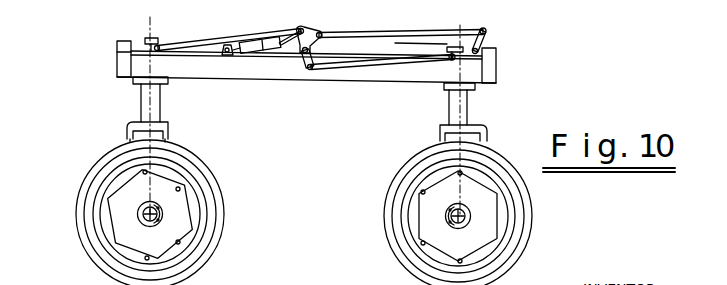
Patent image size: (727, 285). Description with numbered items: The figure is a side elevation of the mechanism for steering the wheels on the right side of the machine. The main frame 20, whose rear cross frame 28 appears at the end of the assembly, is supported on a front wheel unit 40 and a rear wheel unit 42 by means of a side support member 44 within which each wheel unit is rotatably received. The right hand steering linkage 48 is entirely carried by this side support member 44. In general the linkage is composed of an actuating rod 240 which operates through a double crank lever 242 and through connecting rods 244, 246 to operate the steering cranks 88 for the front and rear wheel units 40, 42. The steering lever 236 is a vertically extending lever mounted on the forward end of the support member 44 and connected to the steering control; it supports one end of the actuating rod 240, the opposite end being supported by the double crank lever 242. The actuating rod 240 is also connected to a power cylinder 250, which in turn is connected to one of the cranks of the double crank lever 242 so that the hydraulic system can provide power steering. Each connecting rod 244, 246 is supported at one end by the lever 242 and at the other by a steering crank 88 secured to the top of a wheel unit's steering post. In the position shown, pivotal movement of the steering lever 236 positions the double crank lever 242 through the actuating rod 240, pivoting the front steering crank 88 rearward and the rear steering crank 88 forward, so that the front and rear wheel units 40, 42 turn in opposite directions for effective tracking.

The main frame 20 is at (136, 41).
The rear cross frame 28 is at (117, 60).
The front wheel unit 40 is at (540, 204).
The rear wheel unit 42 is at (79, 169).
The side support member 44 is at (280, 70).
The right hand steering linkage 48 is at (305, 25).
The steering crank 88 is at (457, 60).
The steering lever 236 is at (489, 36).
The actuating rod 240 is at (393, 33).
The double crank lever 242 is at (304, 63).
The connecting rod 244 is at (362, 67).
The connecting rod 246 is at (198, 42).
The power cylinder 250 is at (265, 37).